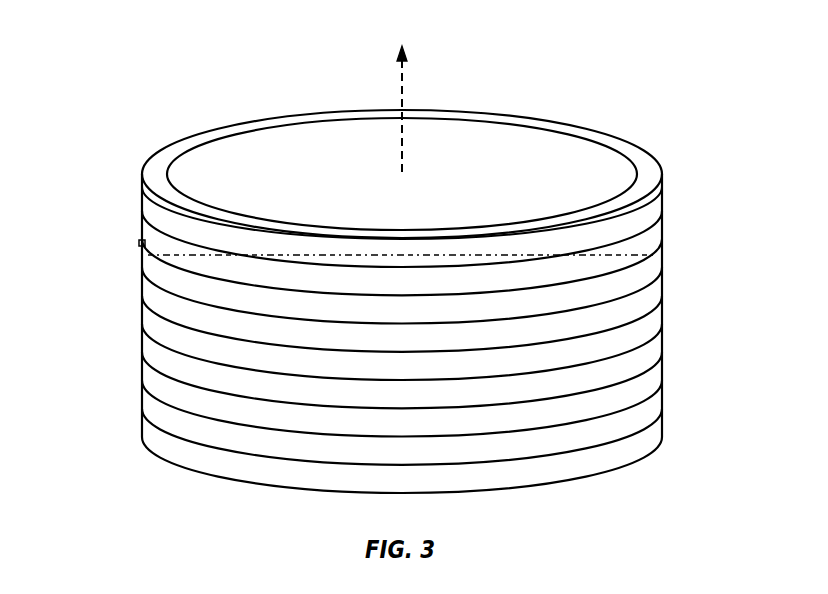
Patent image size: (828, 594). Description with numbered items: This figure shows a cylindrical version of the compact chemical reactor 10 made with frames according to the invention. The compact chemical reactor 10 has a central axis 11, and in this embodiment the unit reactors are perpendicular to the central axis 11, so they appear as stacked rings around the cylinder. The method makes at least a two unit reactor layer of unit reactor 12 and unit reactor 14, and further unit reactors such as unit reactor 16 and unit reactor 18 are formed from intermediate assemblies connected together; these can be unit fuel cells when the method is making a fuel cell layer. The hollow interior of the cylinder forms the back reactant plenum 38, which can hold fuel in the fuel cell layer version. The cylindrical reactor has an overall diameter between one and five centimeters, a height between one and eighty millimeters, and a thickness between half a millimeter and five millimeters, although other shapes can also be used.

The compact chemical reactor 10 is at (131, 94).
The central axis 11 is at (402, 93).
The unit reactor 12 is at (657, 314).
The unit reactor 14 is at (657, 342).
The unit reactor 16 is at (655, 371).
The unit reactor 18 is at (655, 400).
The back reactant plenum 38 is at (562, 176).